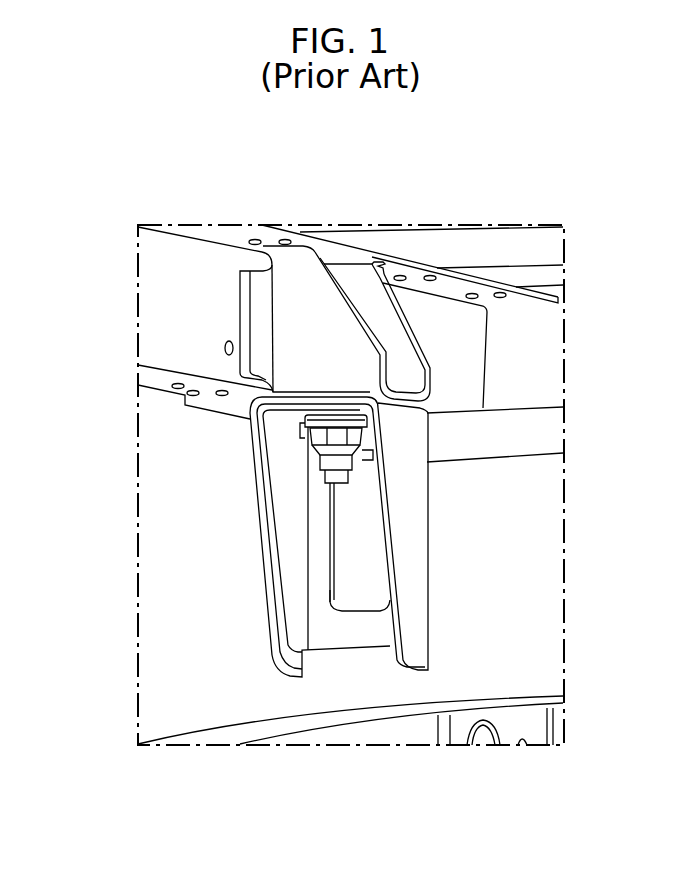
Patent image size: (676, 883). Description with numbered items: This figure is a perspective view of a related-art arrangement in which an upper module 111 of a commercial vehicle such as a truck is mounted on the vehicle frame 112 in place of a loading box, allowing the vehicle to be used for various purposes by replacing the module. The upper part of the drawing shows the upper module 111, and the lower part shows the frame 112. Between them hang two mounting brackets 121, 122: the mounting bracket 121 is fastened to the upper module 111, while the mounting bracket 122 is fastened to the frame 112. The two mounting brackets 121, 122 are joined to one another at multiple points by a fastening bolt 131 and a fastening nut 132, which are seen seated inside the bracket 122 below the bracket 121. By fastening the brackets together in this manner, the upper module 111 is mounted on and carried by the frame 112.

The upper module 111 is at (175, 308).
The frame 112 is at (243, 680).
The mounting bracket 121 is at (318, 327).
The mounting bracket 122 is at (273, 565).
The fastening bolt 131 is at (330, 462).
The fastening nut 132 is at (333, 438).